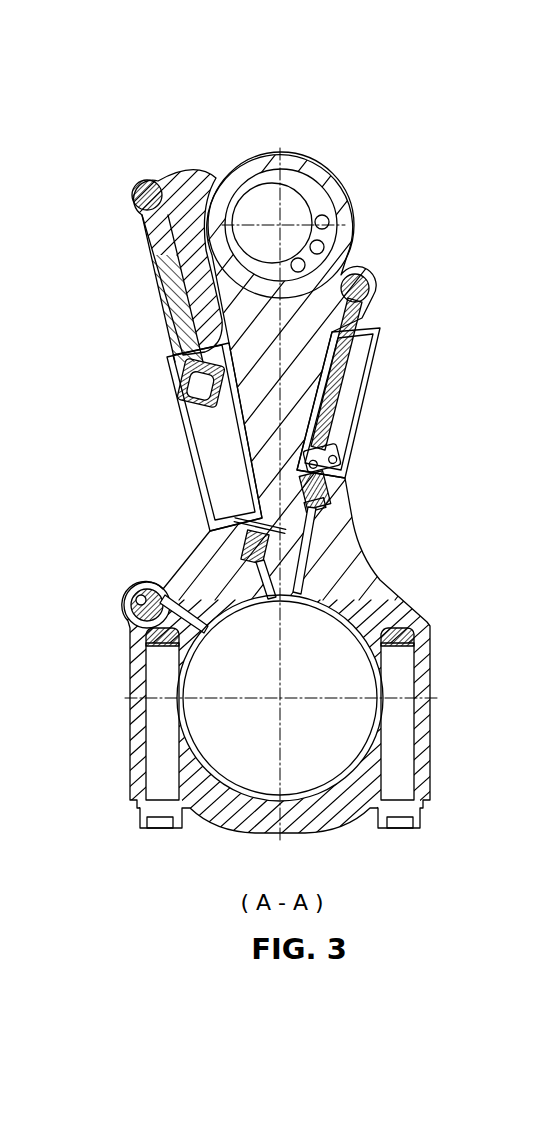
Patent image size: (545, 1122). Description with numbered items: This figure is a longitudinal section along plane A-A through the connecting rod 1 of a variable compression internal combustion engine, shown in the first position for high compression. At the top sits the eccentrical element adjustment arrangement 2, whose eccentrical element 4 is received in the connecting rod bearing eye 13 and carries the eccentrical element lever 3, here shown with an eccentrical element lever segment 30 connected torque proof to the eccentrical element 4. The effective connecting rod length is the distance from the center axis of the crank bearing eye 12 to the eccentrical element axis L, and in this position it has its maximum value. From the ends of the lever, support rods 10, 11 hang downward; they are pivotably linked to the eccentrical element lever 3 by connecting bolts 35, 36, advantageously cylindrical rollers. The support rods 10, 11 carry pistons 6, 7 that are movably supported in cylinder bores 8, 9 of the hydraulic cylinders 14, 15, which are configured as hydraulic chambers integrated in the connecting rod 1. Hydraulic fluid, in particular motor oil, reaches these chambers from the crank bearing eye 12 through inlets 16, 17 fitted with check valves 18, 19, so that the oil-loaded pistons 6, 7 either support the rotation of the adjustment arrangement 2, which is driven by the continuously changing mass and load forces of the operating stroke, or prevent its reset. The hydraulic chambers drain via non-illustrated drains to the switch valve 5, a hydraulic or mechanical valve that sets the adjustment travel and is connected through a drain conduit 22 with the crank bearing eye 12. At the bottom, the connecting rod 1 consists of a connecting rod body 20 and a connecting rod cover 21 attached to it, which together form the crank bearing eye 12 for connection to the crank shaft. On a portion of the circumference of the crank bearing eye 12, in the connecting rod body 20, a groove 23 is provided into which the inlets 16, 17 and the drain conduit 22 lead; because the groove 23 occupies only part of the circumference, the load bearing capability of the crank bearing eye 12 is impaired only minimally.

The connecting rod 1 is at (298, 441).
The eccentrical element adjustment arrangement 2 is at (289, 450).
The eccentrical element lever 3 is at (256, 225).
The eccentrical element 4 is at (312, 160).
The switch valve 5 is at (132, 640).
The piston 6 is at (183, 403).
The piston 7 is at (357, 450).
The cylinder bore 8 is at (194, 437).
The cylinder bore 9 is at (383, 366).
The support rod 10 is at (165, 318).
The support rod 11 is at (352, 400).
The crank bearing eye 12 is at (315, 780).
The connecting rod bearing eye 13 is at (248, 198).
The hydraulic cylinder 14 is at (230, 488).
The hydraulic cylinder 15 is at (337, 482).
The inlet 16 is at (258, 610).
The inlet 17 is at (300, 567).
The check valve 18 is at (243, 548).
The check valve 19 is at (335, 503).
The connecting rod body 20 is at (334, 721).
The connecting rod cover 21 is at (438, 752).
The drain conduit 22 is at (140, 644).
The groove 23 is at (325, 600).
The eccentrical element lever segment 30 is at (162, 230).
The connecting bolt 35 is at (128, 192).
The connecting bolt 36 is at (372, 286).
The eccentrical element axis L is at (160, 256).